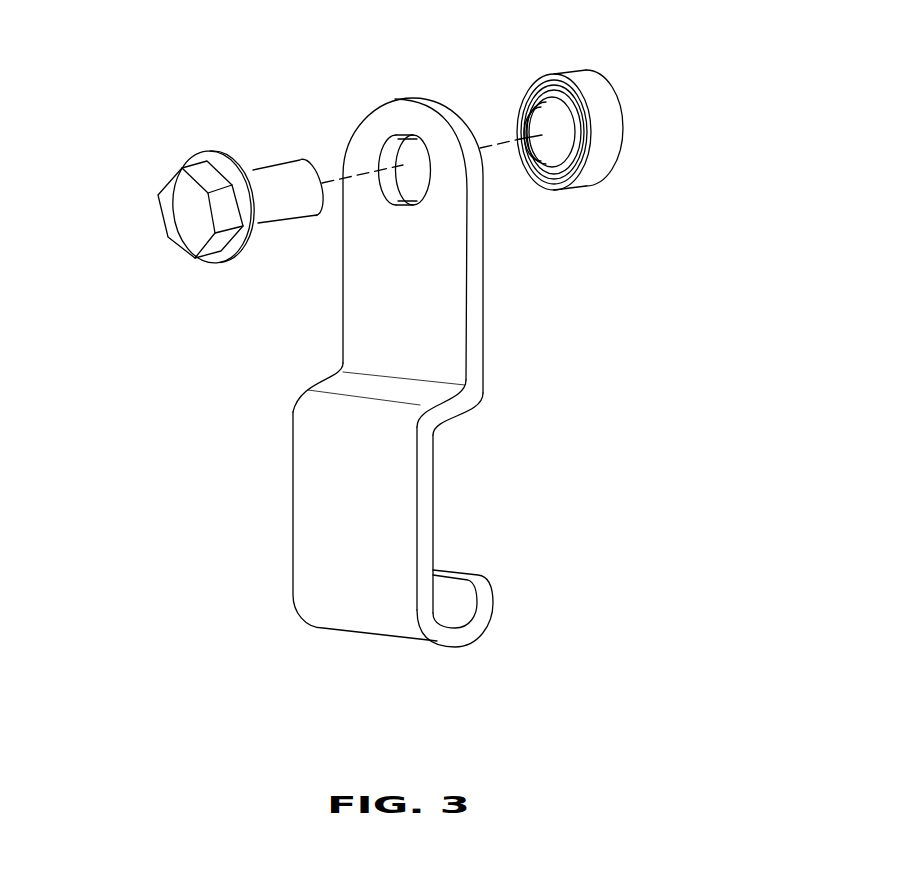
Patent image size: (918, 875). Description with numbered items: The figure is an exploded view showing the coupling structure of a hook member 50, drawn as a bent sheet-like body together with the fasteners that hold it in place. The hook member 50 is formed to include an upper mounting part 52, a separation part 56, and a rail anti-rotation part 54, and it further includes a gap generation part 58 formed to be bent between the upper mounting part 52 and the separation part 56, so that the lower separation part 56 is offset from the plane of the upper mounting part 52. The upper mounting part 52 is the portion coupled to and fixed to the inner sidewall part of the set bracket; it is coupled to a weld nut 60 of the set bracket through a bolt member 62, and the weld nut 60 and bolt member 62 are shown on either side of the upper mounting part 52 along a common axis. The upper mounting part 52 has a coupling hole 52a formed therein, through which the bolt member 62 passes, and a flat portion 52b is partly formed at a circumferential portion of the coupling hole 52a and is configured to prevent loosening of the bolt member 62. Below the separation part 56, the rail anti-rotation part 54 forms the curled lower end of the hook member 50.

The hook member 50 is at (330, 103).
The upper mounting part 52 is at (432, 103).
The coupling hole 52a is at (402, 166).
The flat portion 52b is at (403, 203).
The rail anti-rotation part 54 is at (477, 620).
The separation part 56 is at (320, 518).
The gap generation part 58 is at (398, 390).
The weld nut 60 is at (613, 83).
The bolt member 62 is at (175, 157).